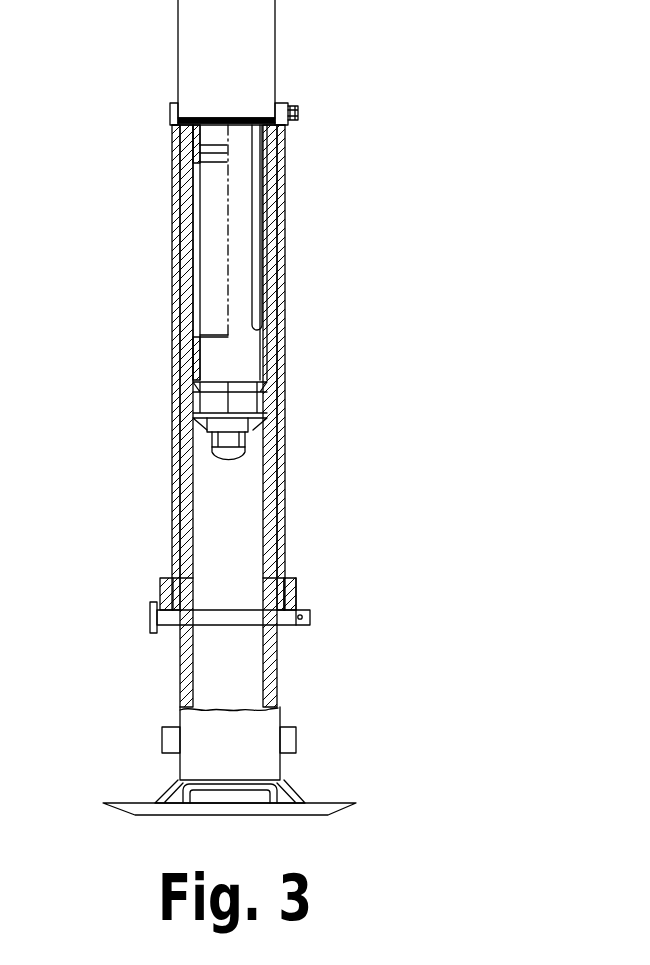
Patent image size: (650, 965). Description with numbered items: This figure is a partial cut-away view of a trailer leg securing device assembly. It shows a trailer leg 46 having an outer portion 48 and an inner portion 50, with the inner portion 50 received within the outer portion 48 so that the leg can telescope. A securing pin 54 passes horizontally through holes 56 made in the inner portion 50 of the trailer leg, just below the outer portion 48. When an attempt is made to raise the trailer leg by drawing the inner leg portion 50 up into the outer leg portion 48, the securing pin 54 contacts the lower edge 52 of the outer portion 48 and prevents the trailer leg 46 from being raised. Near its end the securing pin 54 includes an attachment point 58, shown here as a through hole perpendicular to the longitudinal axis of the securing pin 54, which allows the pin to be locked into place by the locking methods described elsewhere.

The trailer leg 46 is at (363, 187).
The outer portion 48 is at (285, 263).
The inner portion 50 is at (280, 692).
The lower edge 52 is at (296, 585).
The securing pin 54 is at (150, 618).
The holes 56 is at (180, 628).
The attachment point 58 is at (310, 618).